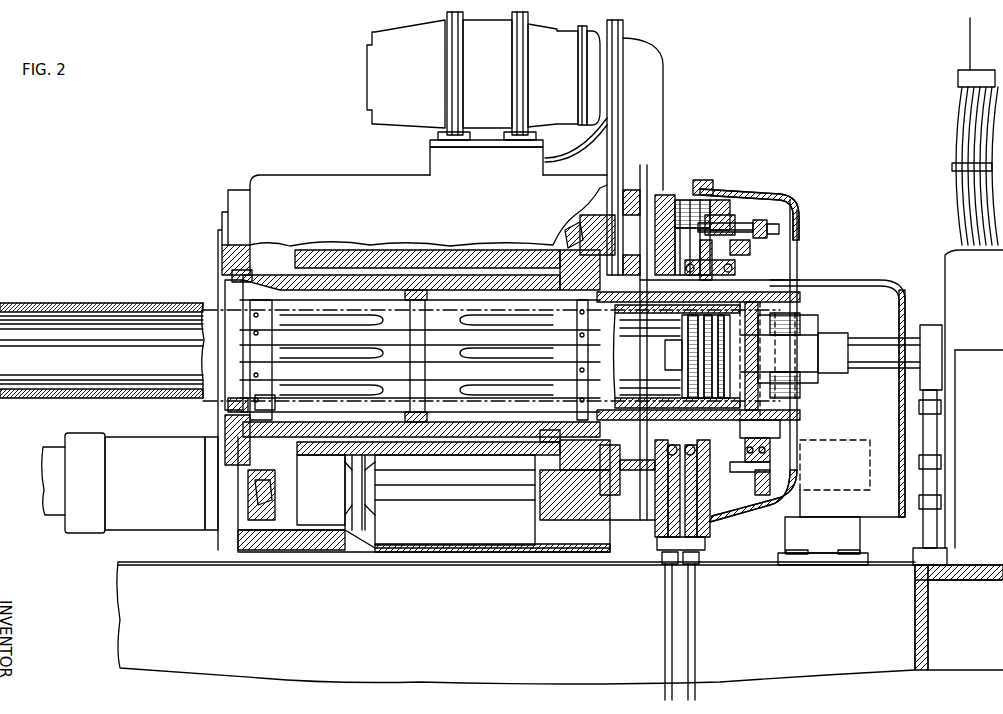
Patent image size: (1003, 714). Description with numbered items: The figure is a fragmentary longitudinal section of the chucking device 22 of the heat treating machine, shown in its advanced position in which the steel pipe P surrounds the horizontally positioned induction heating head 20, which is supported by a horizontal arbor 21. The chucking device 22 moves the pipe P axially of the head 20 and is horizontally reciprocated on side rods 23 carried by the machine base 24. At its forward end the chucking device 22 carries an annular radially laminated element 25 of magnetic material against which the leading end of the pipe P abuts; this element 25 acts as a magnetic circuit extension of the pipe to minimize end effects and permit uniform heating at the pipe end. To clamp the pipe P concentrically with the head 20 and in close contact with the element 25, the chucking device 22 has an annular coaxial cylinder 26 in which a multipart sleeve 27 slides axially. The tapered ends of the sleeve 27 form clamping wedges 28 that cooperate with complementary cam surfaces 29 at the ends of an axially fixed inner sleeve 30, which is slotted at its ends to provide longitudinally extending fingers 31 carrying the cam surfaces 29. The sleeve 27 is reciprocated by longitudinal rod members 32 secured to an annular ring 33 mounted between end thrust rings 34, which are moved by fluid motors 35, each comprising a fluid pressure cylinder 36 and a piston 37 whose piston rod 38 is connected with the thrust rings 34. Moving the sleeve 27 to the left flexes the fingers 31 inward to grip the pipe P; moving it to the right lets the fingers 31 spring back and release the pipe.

The steel pipe P is at (122, 302).
The induction heating head 20 is at (680, 365).
The horizontal arbor 21 is at (862, 340).
The chucking device 22 is at (303, 178).
The side rods 23 is at (52, 490).
The machine base 24 is at (170, 560).
The annular radially laminated element 25 is at (790, 322).
The annular coaxial cylinder 26 is at (400, 458).
The multipart sleeve 27 is at (445, 440).
The clamping wedges 28 is at (228, 430).
The cam surfaces 29 is at (265, 395).
The inner sleeve 30 is at (412, 400).
The fingers 31 is at (336, 389).
The longitudinal rod members 32 is at (718, 440).
The annular ring 33 is at (758, 447).
The end thrust rings 34 is at (760, 470).
The fluid motors 35 is at (668, 200).
The fluid pressure cylinder 36 is at (716, 210).
The piston 37 is at (693, 215).
The piston rod 38 is at (740, 215).